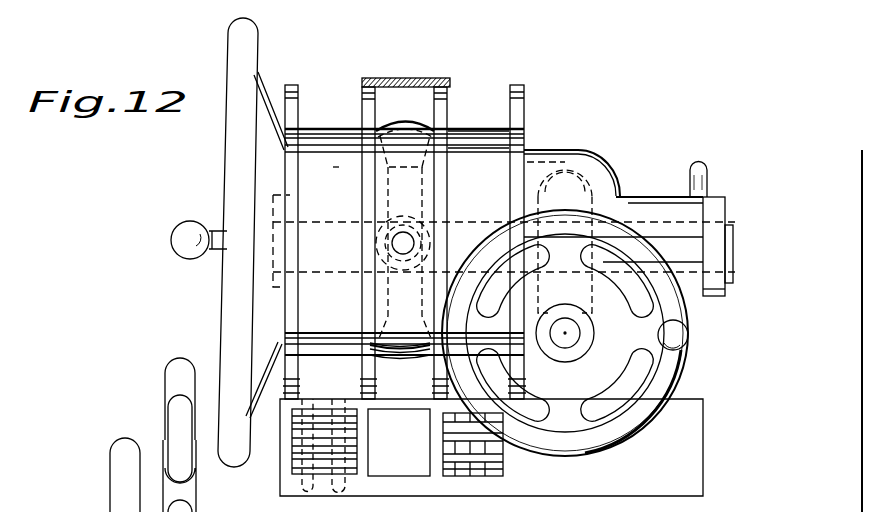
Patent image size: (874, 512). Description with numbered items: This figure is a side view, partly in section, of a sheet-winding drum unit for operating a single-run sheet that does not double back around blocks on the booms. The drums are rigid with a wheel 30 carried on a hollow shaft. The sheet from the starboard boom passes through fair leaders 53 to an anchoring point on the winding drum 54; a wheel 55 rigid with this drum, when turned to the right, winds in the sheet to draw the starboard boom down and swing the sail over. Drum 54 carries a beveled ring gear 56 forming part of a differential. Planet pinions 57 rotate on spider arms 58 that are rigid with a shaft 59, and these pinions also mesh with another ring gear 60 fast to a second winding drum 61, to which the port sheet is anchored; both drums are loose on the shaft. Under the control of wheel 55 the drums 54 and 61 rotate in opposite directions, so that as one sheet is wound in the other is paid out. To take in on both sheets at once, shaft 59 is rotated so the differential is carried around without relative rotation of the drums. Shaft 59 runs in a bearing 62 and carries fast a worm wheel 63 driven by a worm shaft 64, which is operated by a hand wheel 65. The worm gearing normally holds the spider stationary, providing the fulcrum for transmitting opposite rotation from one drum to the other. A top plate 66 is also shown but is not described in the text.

The wheel 30 is at (104, 495).
The fair leaders 53 is at (293, 469).
The winding drum 54 is at (349, 128).
The wheel 55 is at (222, 49).
The beveled ring gear 56 is at (380, 192).
The planet pinions 57 is at (452, 86).
The spider arms 58 is at (391, 241).
The shaft 59 is at (494, 213).
The ring gear 60 is at (425, 179).
The winding drum 61 is at (488, 128).
The bearing 62 is at (620, 192).
The worm wheel 63 is at (567, 178).
The worm shaft 64 is at (552, 351).
The wheel 65 is at (630, 445).
The top plate 66 is at (414, 77).